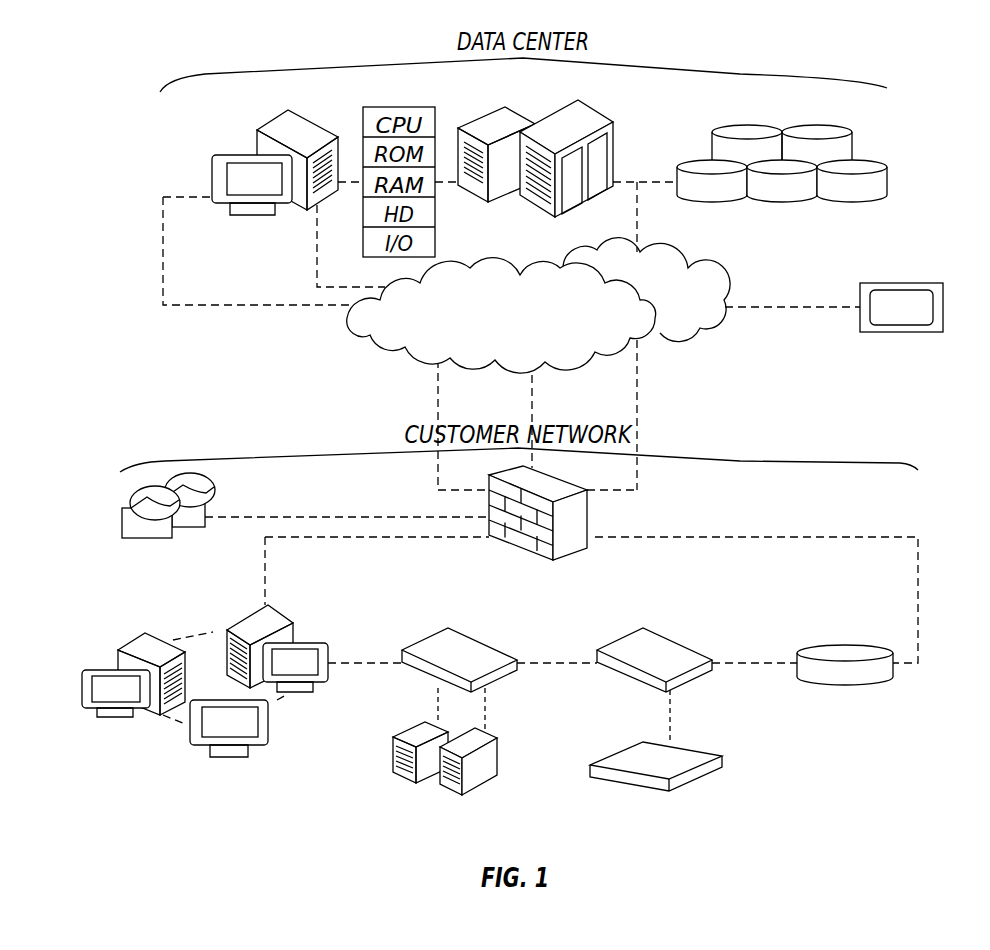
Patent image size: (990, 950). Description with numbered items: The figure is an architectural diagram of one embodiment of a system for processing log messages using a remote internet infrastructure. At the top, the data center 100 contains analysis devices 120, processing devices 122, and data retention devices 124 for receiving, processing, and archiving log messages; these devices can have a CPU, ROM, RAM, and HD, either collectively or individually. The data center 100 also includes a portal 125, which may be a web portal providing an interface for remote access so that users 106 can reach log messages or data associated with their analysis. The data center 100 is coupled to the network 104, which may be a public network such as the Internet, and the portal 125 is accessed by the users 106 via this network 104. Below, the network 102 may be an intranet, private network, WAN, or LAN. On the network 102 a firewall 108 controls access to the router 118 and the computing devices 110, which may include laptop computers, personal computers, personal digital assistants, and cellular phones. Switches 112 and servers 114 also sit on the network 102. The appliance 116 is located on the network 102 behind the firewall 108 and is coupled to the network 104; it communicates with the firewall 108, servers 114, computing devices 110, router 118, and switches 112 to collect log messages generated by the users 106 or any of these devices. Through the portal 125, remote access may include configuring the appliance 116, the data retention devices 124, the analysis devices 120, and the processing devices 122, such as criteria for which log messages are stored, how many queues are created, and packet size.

The data center 100 is at (733, 73).
The network 102 is at (735, 460).
The network 104 is at (725, 307).
The users 106 is at (120, 521).
The firewall 108 is at (590, 527).
The computing devices 110 is at (103, 668).
The switches 112 is at (472, 634).
The servers 114 is at (498, 762).
The appliance 116 is at (718, 776).
The router 118 is at (850, 645).
The analysis devices 120 is at (272, 118).
The processing devices 122 is at (565, 105).
The data retention devices 124 is at (818, 124).
The portal 125 is at (900, 283).